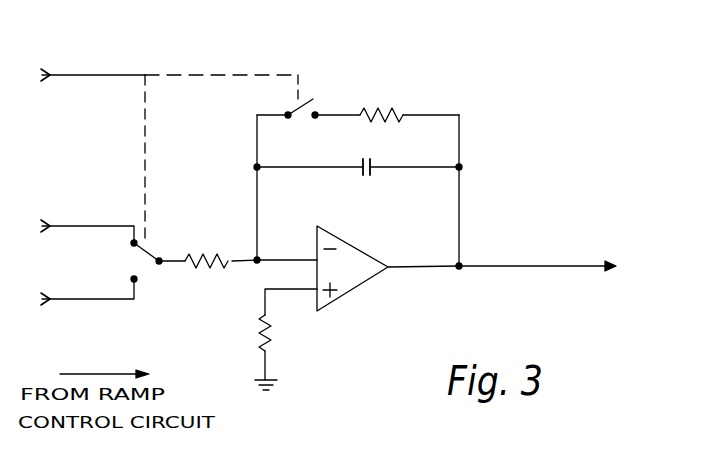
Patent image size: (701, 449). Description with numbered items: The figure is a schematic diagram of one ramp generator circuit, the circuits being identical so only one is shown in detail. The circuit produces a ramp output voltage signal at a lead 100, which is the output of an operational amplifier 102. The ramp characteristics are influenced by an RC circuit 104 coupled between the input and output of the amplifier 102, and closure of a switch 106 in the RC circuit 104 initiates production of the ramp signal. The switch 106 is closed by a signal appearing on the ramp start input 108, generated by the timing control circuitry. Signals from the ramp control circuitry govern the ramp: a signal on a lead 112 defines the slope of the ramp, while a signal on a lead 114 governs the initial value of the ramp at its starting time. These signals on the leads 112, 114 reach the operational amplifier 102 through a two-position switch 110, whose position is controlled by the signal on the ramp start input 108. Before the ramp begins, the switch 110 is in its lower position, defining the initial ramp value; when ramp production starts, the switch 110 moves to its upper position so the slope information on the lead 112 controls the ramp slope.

The lead 100 is at (529, 265).
The operational amplifier 102 is at (364, 283).
The RC circuit 104 is at (420, 153).
The switch 106 is at (308, 100).
The ramp start input 108 is at (53, 73).
The two-position switch 110 is at (145, 268).
The lead 112 is at (66, 229).
The lead 114 is at (140, 300).